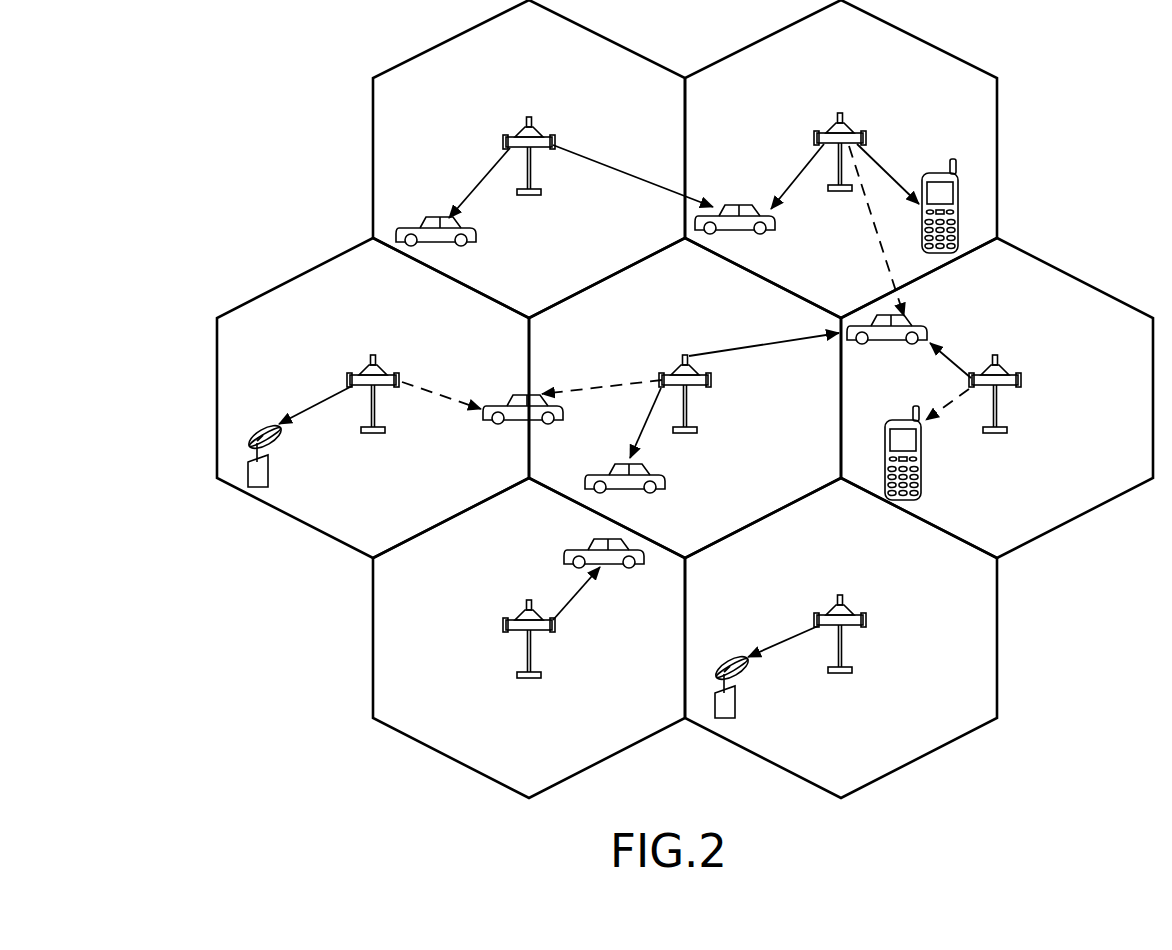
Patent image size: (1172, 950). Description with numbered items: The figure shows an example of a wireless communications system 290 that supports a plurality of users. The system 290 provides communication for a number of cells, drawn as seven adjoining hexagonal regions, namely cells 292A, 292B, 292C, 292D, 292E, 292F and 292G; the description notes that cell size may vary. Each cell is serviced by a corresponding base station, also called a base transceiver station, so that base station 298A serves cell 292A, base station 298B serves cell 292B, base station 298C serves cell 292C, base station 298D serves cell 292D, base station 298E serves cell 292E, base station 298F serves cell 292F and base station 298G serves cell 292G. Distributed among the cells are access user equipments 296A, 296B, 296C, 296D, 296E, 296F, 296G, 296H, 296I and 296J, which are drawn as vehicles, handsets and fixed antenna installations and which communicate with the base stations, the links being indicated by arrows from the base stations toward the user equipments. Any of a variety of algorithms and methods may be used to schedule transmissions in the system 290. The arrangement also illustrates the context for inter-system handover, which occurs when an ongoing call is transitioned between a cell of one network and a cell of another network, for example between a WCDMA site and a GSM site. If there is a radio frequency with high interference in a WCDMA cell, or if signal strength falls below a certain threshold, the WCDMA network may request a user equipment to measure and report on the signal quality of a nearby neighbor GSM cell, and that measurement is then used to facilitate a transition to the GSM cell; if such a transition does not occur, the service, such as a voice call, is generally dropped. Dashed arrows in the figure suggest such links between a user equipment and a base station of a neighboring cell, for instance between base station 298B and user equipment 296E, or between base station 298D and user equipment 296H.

The wireless communications system 290 is at (148, 82).
The cell 292A is at (552, 41).
The cell 292B is at (863, 41).
The cell 292C is at (399, 292).
The cell 292D is at (705, 292).
The cell 292E is at (1021, 292).
The cell 292F is at (552, 527).
The cell 292G is at (865, 527).
The base station 298A is at (529, 117).
The base station 298B is at (841, 113).
The base station 298C is at (374, 355).
The base station 298D is at (686, 355).
The base station 298E is at (996, 355).
The base station 298F is at (530, 600).
The base station 298G is at (841, 595).
The user equipment 296A is at (478, 239).
The user equipment 296B is at (936, 172).
The user equipment 296C is at (269, 470).
The user equipment 296D is at (666, 485).
The user equipment 296E is at (883, 346).
The user equipment 296F is at (641, 569).
The user equipment 296G is at (736, 705).
The user equipment 296H is at (490, 424).
The user equipment 296I is at (922, 480).
The user equipment 296J is at (735, 205).